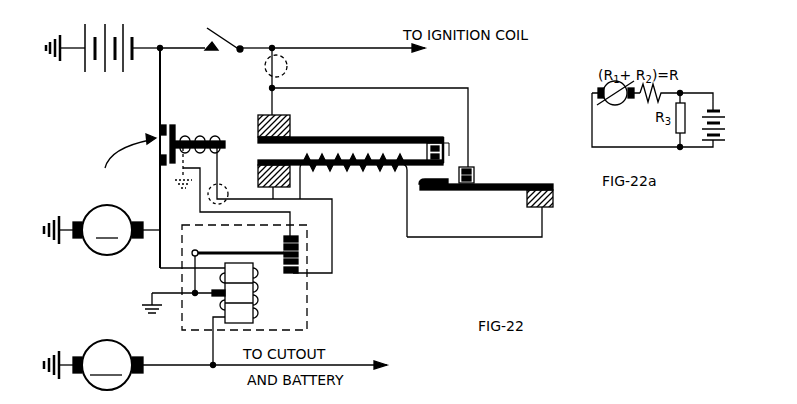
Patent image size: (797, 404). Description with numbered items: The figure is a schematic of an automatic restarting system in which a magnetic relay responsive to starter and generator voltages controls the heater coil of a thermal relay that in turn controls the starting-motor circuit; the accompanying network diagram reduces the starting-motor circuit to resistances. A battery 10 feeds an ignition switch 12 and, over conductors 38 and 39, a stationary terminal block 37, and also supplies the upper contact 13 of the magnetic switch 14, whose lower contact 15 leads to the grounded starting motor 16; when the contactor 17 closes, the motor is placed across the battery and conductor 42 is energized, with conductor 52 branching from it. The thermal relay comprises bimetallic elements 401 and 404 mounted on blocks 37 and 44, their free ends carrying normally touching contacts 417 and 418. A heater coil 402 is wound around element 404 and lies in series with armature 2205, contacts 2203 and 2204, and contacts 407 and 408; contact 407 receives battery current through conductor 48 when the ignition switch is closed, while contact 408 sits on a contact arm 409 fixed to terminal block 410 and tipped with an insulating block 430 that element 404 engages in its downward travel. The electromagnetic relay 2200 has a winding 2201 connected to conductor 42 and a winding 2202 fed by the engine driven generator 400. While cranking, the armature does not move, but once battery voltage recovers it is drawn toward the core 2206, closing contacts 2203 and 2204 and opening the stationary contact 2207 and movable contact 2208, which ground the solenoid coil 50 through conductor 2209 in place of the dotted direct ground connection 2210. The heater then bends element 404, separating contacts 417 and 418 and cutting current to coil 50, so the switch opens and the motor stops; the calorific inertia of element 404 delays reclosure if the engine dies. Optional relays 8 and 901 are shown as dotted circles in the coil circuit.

In FIG. 22, the battery 10 is at (88, 24).
In FIG. 22A, the battery 10 is at (727, 124).
In FIG. 22, the conductor 39 is at (196, 47).
In FIG. 22, the ignition switch 12 is at (225, 37).
In FIG. 22, the conductor 48 is at (358, 47).
In FIG. 22, the relay 901 is at (291, 66).
In FIG. 22, the conductor 38 is at (270, 85).
In FIG. 22, the stationary terminal block 37 is at (262, 113).
In FIG. 22, the bimetallic element 401 is at (335, 131).
In FIG. 22, the contact 417 is at (443, 140).
In FIG. 22, the contact 418 is at (446, 152).
In FIG. 22, the bimetallic element 404 is at (283, 158).
In FIG. 22, the heater coil 402 is at (344, 172).
In FIG. 22, the stationary terminal block 44 is at (258, 172).
In FIG. 22, the contact 407 is at (476, 170).
In FIG. 22, the contact 408 is at (476, 180).
In FIG. 22, the contact arm 409 is at (495, 190).
In FIG. 22, the insulating block 430 is at (421, 182).
In FIG. 22, the terminal block 410 is at (528, 206).
In FIG. 22, the upper contact 13 is at (158, 130).
In FIG. 22, the lower contact 15 is at (158, 158).
In FIG. 22, the contactor 17 is at (176, 125).
In FIG. 22, the coil 50 is at (215, 130).
In FIG. 22, the magnetic switch 14 is at (125, 161).
In FIG. 22, the ground connection 2210 is at (172, 183).
In FIG. 22, the conductor 42 is at (190, 198).
In FIG. 22, the relay 8 is at (215, 185).
In FIG. 22, the starting motor 16 is at (102, 230).
In FIG. 22, the conductor 52 is at (157, 264).
In FIG. 22, the electromagnetic relay 2200 is at (310, 300).
In FIG. 22, the armature 2205 is at (245, 250).
In FIG. 22, the core 2206 is at (226, 306).
In FIG. 22, the winding 2201 is at (257, 283).
In FIG. 22, the winding 2202 is at (254, 318).
In FIG. 22, the conductor 2209 is at (300, 236).
In FIG. 22, the stationary contact 2207 is at (298, 245).
In FIG. 22, the movable contact 2208 is at (298, 252).
In FIG. 22, the contact 2204 is at (298, 259).
In FIG. 22, the contact 2203 is at (298, 268).
In FIG. 22, the engine driven generator 400 is at (93, 365).